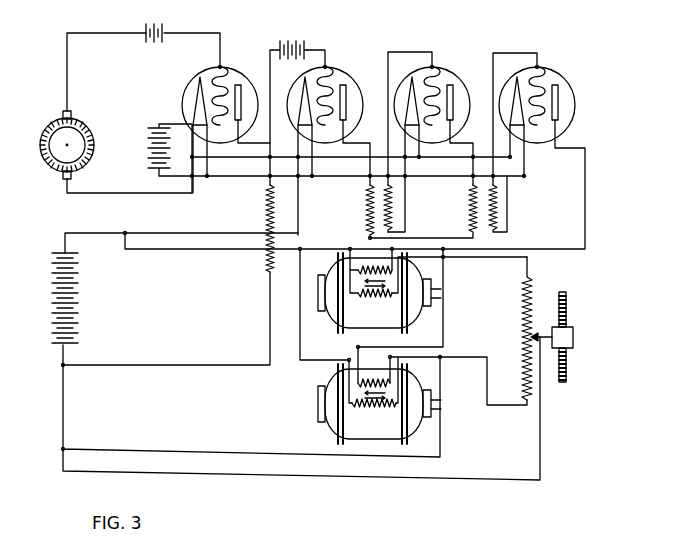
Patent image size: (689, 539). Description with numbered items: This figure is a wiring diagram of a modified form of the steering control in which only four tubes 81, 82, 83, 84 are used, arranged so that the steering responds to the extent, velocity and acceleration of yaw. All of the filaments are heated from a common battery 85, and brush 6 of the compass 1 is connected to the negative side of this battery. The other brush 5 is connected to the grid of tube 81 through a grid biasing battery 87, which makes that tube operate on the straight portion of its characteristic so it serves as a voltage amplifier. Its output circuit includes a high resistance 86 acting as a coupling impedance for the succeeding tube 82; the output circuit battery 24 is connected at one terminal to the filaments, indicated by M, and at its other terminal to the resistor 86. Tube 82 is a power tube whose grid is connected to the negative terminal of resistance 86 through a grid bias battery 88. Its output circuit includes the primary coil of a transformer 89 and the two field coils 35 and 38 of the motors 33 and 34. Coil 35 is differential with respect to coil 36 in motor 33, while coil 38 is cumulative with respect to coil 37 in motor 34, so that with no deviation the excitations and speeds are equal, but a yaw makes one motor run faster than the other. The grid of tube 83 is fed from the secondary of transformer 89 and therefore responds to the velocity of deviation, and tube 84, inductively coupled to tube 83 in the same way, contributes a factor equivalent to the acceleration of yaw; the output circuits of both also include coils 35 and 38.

The compass 1 is at (40, 145).
The brush 5 is at (71, 111).
The brush 6 is at (63, 179).
The output circuit battery 24 is at (78, 300).
The motor 33 is at (330, 315).
The motor 34 is at (328, 387).
The field coil 35 is at (370, 266).
The coil 36 is at (385, 298).
The coil 37 is at (380, 408).
The field coil 38 is at (368, 379).
The tube 81 is at (238, 72).
The amplifier tube 82 is at (340, 72).
The tube 83 is at (450, 72).
The tube 84 is at (553, 72).
The battery 85 is at (148, 150).
The high resistance 86 is at (266, 213).
The grid biasing battery 87 is at (160, 24).
The grid bias battery 88 is at (302, 44).
The transformer 89 is at (366, 213).
The filaments M is at (298, 160).